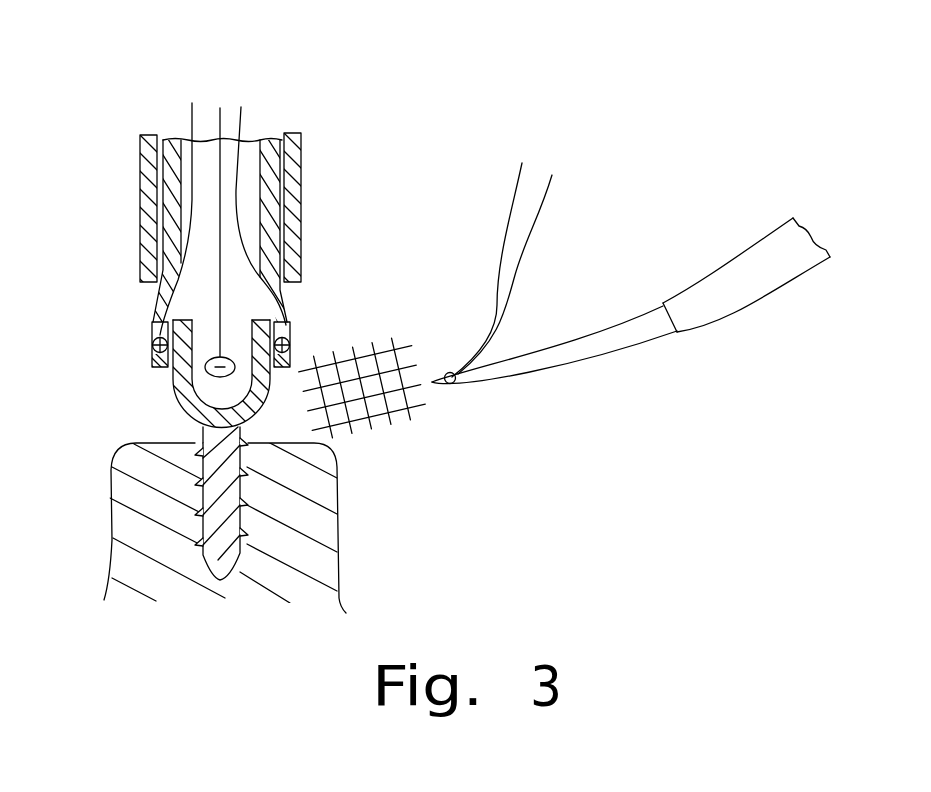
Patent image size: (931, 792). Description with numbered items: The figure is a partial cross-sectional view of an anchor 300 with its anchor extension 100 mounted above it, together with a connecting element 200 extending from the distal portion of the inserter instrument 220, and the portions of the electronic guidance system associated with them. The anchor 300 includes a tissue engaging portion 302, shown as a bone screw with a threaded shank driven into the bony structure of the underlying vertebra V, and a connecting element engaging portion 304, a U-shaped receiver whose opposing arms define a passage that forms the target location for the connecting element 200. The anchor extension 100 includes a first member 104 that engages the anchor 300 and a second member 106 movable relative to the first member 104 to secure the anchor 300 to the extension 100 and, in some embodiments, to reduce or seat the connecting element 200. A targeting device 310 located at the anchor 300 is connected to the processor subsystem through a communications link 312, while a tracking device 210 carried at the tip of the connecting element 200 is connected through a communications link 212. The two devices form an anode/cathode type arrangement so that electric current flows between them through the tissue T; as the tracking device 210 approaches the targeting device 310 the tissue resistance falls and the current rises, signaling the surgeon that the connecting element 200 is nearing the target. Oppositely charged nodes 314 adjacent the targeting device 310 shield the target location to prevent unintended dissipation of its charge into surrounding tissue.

The anchor extension 100 is at (301, 159).
The first member 104 is at (272, 215).
The second member 106 is at (140, 177).
The communications link 312 is at (222, 121).
The oppositely charged nodes 314 is at (155, 335).
The anchor 300 is at (172, 413).
The targeting device 310 is at (206, 373).
The connecting element engaging portion 304 is at (198, 441).
The tissue engaging portion 302 is at (213, 500).
The vertebra V is at (110, 488).
The tissue T is at (387, 348).
The connecting element 200 is at (561, 342).
The tracking device 210 is at (450, 371).
The communications link 212 is at (534, 236).
The inserter instrument 220 is at (750, 313).